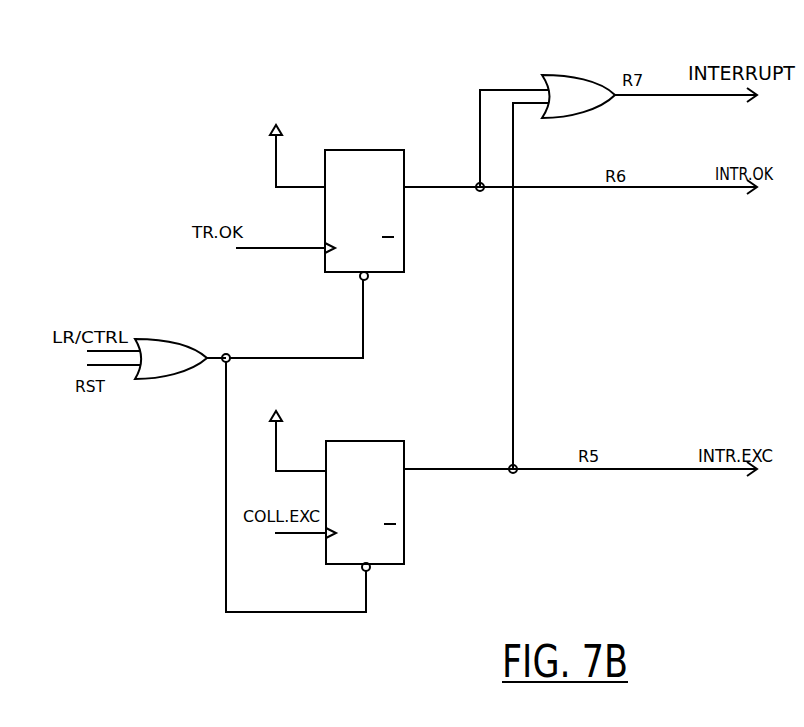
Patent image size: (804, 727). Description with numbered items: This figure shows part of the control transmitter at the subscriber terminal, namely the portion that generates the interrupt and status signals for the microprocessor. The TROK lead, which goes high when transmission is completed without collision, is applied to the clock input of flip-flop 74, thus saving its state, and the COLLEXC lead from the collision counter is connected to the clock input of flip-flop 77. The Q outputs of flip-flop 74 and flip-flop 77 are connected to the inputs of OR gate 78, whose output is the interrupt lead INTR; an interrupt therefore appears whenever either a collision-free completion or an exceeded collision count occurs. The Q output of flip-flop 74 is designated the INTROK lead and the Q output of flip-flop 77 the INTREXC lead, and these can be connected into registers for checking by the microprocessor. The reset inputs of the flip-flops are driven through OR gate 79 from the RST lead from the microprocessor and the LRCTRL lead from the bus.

The flip-flop 74 is at (404, 240).
The flip-flop 77 is at (404, 536).
The OR gate 78 is at (562, 76).
The OR gate 79 is at (158, 338).